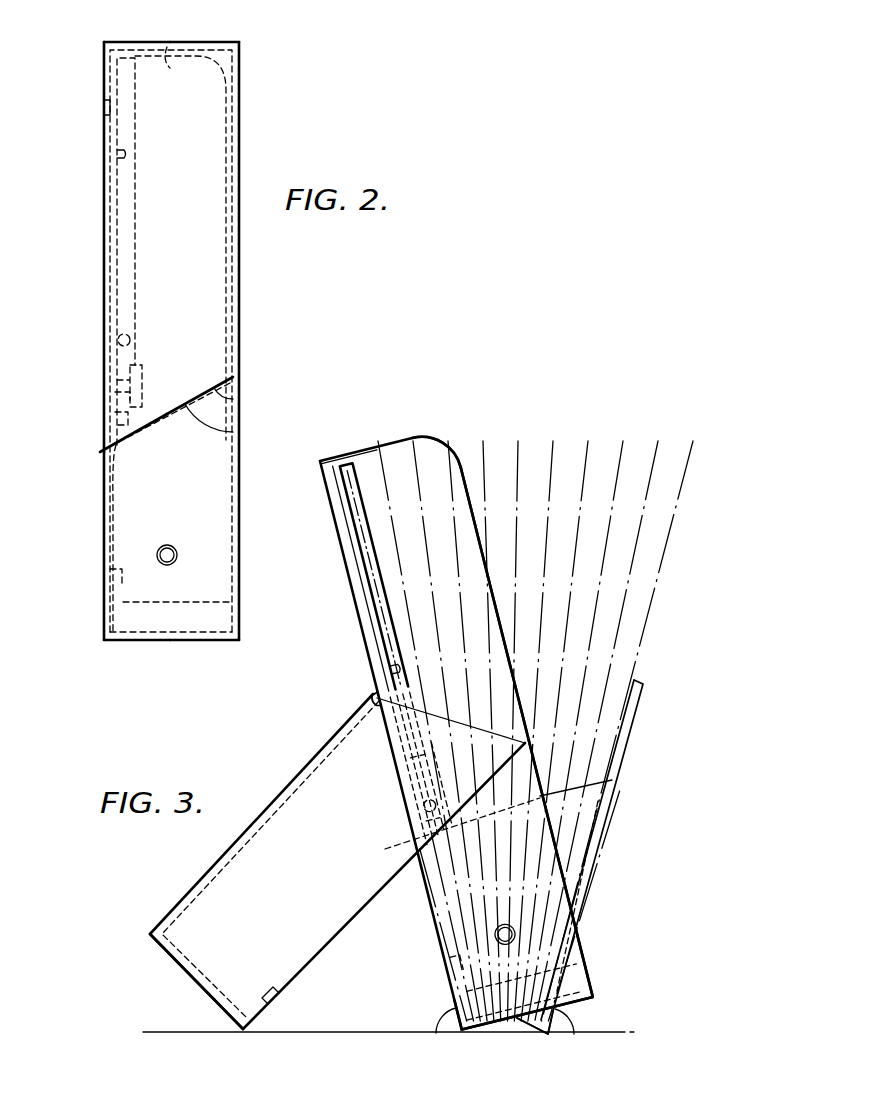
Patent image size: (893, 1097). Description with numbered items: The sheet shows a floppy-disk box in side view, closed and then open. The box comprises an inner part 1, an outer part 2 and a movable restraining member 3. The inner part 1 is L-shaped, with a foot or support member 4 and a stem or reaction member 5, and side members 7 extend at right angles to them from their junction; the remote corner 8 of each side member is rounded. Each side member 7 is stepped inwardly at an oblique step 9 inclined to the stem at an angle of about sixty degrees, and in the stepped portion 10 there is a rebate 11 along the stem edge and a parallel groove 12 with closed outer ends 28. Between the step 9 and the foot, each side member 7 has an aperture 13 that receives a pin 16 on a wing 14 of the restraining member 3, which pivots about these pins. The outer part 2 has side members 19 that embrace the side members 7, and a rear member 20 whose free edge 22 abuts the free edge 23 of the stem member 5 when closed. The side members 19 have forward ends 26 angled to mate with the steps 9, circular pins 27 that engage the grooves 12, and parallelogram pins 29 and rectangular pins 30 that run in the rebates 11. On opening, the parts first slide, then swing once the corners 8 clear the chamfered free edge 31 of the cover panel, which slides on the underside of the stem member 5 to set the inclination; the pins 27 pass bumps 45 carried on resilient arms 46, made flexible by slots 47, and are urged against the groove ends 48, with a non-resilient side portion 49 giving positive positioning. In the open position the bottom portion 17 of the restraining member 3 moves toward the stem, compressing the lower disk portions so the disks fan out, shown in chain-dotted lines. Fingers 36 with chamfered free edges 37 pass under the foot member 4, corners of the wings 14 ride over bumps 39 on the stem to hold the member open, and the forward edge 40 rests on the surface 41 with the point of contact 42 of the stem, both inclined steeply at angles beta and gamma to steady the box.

In FIG. 3, the inner part 1 is at (340, 638).
In FIG. 3, the outer part 2 is at (248, 808).
In FIG. 3, the restraining member 3 is at (614, 828).
In FIG. 2, the foot member 4 is at (122, 642).
In FIG. 3, the foot member 4 is at (487, 1034).
In FIG. 2, the stem member 5 is at (104, 528).
In FIG. 3, the stem member 5 is at (350, 579).
In FIG. 2, the side members 7 is at (184, 501).
In FIG. 3, the side members 7 is at (412, 497).
In FIG. 2, the rounded corner 8 is at (238, 55).
In FIG. 3, the rounded corner 8 is at (436, 446).
In FIG. 2, the oblique step 9 is at (230, 430).
In FIG. 3, the oblique step 9 is at (500, 770).
In FIG. 2, the stepped portion 10 is at (167, 45).
In FIG. 3, the stepped portion 10 is at (397, 668).
In FIG. 2, the rebate 11 is at (104, 203).
In FIG. 3, the rebate 11 is at (433, 645).
In FIG. 2, the groove 12 is at (118, 153).
In FIG. 3, the groove 12 is at (376, 693).
In FIG. 2, the aperture 13 is at (157, 553).
In FIG. 3, the aperture 13 is at (517, 930).
In FIG. 3, the wings 14 is at (567, 843).
In FIG. 2, the pin 16 is at (165, 565).
In FIG. 3, the pin 16 is at (512, 931).
In FIG. 3, the bottom portion 17 is at (583, 952).
In FIG. 3, the side members 19 is at (242, 897).
In FIG. 2, the rear member 20 is at (188, 42).
In FIG. 3, the rear member 20 is at (177, 963).
In FIG. 2, the free edge 22 is at (104, 41).
In FIG. 2, the free edge 23 is at (108, 59).
In FIG. 3, the free edge 23 is at (321, 458).
In FIG. 2, the forward ends 26 is at (167, 390).
In FIG. 2, the circular pins 27 is at (118, 340).
In FIG. 3, the circular pins 27 is at (417, 803).
In FIG. 3, the closed outer ends 28 is at (355, 462).
In FIG. 2, the parallelogram pins 29 is at (110, 301).
In FIG. 3, the parallelogram pins 29 is at (417, 840).
In FIG. 2, the rectangular pins 30 is at (104, 107).
In FIG. 3, the rectangular pins 30 is at (271, 985).
In FIG. 3, the chamfered free edge 31 is at (375, 702).
In FIG. 2, the fingers 36 is at (209, 642).
In FIG. 3, the fingers 36 is at (527, 1034).
In FIG. 2, the free edges 37 is at (190, 641).
In FIG. 3, the free edges 37 is at (513, 1033).
In FIG. 2, the bumps 39 is at (110, 582).
In FIG. 3, the bumps 39 is at (450, 978).
In FIG. 3, the forward edge 40 is at (545, 1033).
In FIG. 3, the surface 41 is at (333, 1023).
In FIG. 3, the point of contact 42 is at (460, 1034).
In FIG. 2, the bumps 45 is at (108, 412).
In FIG. 2, the resilient arm 46 is at (115, 390).
In FIG. 2, the slot 47 is at (126, 373).
In FIG. 2, the ends 48 is at (108, 462).
In FIG. 2, the side portion 49 is at (104, 448).